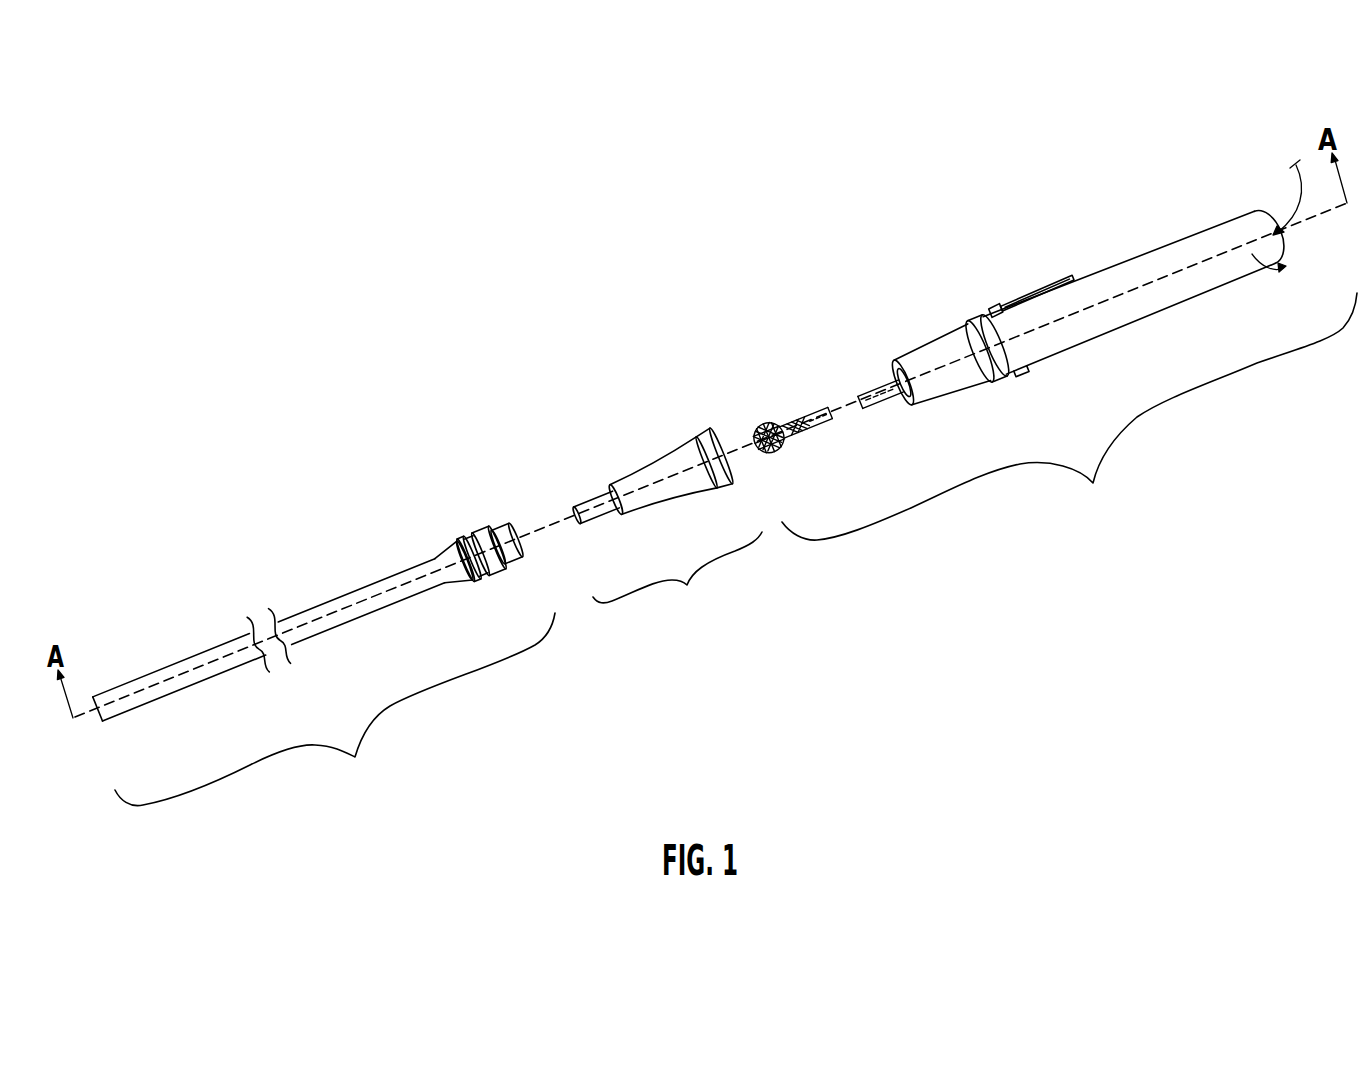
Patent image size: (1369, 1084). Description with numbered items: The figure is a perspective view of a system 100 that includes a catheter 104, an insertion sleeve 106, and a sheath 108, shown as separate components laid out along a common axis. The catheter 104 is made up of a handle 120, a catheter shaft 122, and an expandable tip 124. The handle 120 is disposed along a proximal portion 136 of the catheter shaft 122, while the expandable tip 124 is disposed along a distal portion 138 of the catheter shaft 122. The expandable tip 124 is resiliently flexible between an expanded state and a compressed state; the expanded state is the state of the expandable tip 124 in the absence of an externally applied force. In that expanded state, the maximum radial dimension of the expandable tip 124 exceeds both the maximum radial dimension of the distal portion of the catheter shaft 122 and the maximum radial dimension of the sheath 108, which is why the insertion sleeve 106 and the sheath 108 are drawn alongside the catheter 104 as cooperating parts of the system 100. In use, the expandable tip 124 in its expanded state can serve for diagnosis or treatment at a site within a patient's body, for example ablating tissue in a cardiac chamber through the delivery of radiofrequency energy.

The system 100 is at (147, 313).
The catheter 104 is at (1069, 350).
The insertion sleeve 106 is at (663, 526).
The sheath 108 is at (321, 658).
The handle 120 is at (1207, 243).
The catheter shaft 122 is at (875, 402).
The expandable tip 124 is at (739, 404).
The proximal portion 136 is at (876, 358).
The distal portion 138 is at (819, 395).